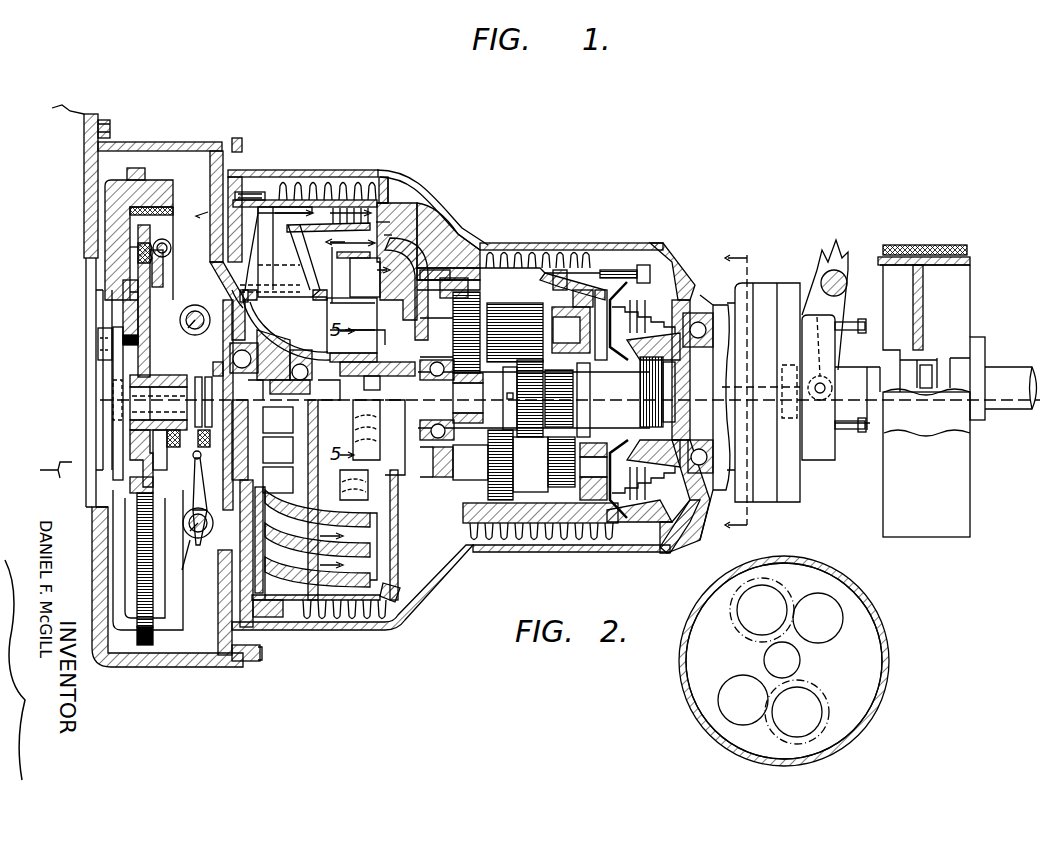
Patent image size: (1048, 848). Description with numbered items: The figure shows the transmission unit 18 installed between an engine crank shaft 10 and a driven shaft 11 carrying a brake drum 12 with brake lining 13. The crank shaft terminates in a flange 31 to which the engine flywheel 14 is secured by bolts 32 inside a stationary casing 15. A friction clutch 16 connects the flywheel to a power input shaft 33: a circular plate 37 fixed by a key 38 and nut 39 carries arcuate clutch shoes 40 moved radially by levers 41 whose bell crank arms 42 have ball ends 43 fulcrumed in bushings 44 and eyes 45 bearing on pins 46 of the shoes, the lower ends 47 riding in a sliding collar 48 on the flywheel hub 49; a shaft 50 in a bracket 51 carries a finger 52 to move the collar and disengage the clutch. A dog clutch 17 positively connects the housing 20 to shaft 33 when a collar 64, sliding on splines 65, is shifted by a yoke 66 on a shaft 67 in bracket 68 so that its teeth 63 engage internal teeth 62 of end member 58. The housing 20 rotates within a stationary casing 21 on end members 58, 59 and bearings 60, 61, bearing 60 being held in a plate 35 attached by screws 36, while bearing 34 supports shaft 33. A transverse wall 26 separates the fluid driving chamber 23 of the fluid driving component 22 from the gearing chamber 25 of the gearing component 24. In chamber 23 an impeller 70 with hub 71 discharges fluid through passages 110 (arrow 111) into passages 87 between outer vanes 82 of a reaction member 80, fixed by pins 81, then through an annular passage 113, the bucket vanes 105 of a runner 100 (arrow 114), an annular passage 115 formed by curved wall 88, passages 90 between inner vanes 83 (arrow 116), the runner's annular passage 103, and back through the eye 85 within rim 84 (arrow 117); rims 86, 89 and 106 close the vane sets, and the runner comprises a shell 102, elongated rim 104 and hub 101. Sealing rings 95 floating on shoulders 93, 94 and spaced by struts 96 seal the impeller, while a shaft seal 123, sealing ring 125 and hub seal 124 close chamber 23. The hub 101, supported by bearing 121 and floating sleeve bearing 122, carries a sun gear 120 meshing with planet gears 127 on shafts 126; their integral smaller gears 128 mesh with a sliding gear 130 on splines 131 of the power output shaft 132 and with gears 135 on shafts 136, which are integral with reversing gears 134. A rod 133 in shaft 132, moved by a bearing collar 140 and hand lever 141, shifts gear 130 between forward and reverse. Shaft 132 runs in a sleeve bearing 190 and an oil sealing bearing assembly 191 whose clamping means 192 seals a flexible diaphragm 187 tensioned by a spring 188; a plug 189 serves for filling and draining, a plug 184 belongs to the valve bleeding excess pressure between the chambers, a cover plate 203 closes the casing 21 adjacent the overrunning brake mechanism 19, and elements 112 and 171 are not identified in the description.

In FIG. 1, the engine crank shaft 10 is at (95, 450).
In FIG. 1, the driven shaft 11 is at (1018, 410).
In FIG. 1, the brake drum 12 is at (962, 300).
In FIG. 1, the brake lining 13 is at (967, 250).
In FIG. 1, the engine flywheel 14 is at (168, 630).
In FIG. 1, the stationary casing 15 is at (143, 645).
In FIG. 1, the friction clutch 16 is at (210, 212).
In FIG. 1, the dog clutch 17 is at (228, 372).
In FIG. 1, the transmission unit 18 is at (478, 243).
In FIG. 1, the overrunning brake mechanism 19 is at (770, 272).
In FIG. 1, the housing 20 is at (303, 605).
In FIG. 2, the housing 20 is at (886, 628).
In FIG. 1, the stationary casing 21 is at (425, 607).
In FIG. 1, the fluid driving component 22 is at (373, 590).
In FIG. 1, the fluid driving chamber 23 is at (400, 590).
In FIG. 1, the gearing component 24 is at (536, 505).
In FIG. 1, the gearing chamber 25 is at (560, 270).
In FIG. 2, the gearing chamber 25 is at (878, 676).
In FIG. 1, the transverse wall 26 is at (450, 540).
In FIG. 1, the flange 31 is at (130, 488).
In FIG. 1, the bolts 32 is at (98, 342).
In FIG. 1, the power input shaft 33 is at (135, 405).
In FIG. 1, the bearing 34 is at (302, 348).
In FIG. 1, the plate 35 is at (212, 190).
In FIG. 1, the screws 36 is at (240, 138).
In FIG. 1, the circular plate 37 is at (113, 302).
In FIG. 1, the key 38 is at (130, 390).
In FIG. 1, the nut 39 is at (130, 425).
In FIG. 1, the arcuate clutch shoes 40 is at (105, 205).
In FIG. 1, the levers 41 is at (130, 298).
In FIG. 1, the bell crank arms 42 is at (138, 232).
In FIG. 1, the ball ends 43 is at (150, 244).
In FIG. 1, the bushings 44 is at (130, 247).
In FIG. 1, the eyes 45 is at (138, 258).
In FIG. 1, the pins 46 is at (172, 246).
In FIG. 1, the lower ends of levers 47 is at (112, 322).
In FIG. 1, the sliding collar 48 is at (130, 378).
In FIG. 1, the hub of flywheel 49 is at (130, 430).
In FIG. 1, the shaft 50 is at (100, 310).
In FIG. 1, the bracket 51 is at (138, 300).
In FIG. 1, the yoke or finger 52 is at (195, 335).
In FIG. 1, the end member 58 is at (240, 192).
In FIG. 1, the end member 59 is at (675, 275).
In FIG. 1, the bearing 60 is at (232, 352).
In FIG. 1, the bearing 61 is at (700, 313).
In FIG. 1, the internal teeth 62 is at (270, 406).
In FIG. 1, the comating teeth 63 is at (278, 454).
In FIG. 1, the collar 64 is at (205, 460).
In FIG. 1, the splines 65 is at (150, 400).
In FIG. 1, the finger or yoke 66 is at (153, 470).
In FIG. 1, the shaft 67 is at (198, 538).
In FIG. 1, the bracket 68 is at (208, 540).
In FIG. 1, the impeller 70 is at (295, 178).
In FIG. 1, the hub 71 is at (326, 490).
In FIG. 1, the reaction member 80 is at (333, 206).
In FIG. 1, the pins 81 is at (228, 230).
In FIG. 1, the outer set of vanes 82 is at (340, 206).
In FIG. 1, the inner set of vanes 83 is at (452, 225).
In FIG. 1, the inner cylindrical rim 84 is at (445, 245).
In FIG. 1, the eye 85 is at (397, 261).
In FIG. 1, the cylindrical rim 86 is at (347, 206).
In FIG. 1, the radially closed passages 87 is at (361, 206).
In FIG. 1, the curved wall 88 is at (354, 206).
In FIG. 1, the cylindrical rim 89 is at (432, 220).
In FIG. 1, the radially closed passages 90 is at (370, 277).
In FIG. 1, the annular shoulder 93 is at (262, 310).
In FIG. 1, the annular shoulder 94 is at (305, 310).
In FIG. 1, the sealing rings 95 is at (240, 292).
In FIG. 1, the pins or struts 96 is at (240, 285).
In FIG. 1, the runner 100 is at (488, 258).
In FIG. 1, the hub 101 is at (365, 337).
In FIG. 1, the shell 102 is at (470, 258).
In FIG. 1, the annular fluid passage 103 is at (406, 289).
In FIG. 1, the elongated rim 104 is at (418, 196).
In FIG. 1, the bucket vanes 105 is at (352, 470).
In FIG. 1, the surrounding cylindrical rim 106 is at (382, 222).
In FIG. 1, the passages 110 is at (307, 253).
In FIG. 1, the arrow 111 is at (273, 205).
In FIG. 1, the pin 112 is at (290, 205).
In FIG. 1, the circumferential annular passage 113 is at (368, 206).
In FIG. 1, the arrow 114 is at (390, 235).
In FIG. 1, the annular passage 115 is at (325, 240).
In FIG. 1, the arrow 116 is at (357, 262).
In FIG. 1, the arrow 117 is at (362, 319).
In FIG. 1, the sun gear 120 is at (460, 418).
In FIG. 2, the sun gear 120 is at (800, 658).
In FIG. 1, the bearing 121 is at (415, 466).
In FIG. 1, the floating sleeve bearing 122 is at (374, 388).
In FIG. 1, the shaft seal 123 is at (290, 363).
In FIG. 1, the hub seal 124 is at (382, 430).
In FIG. 1, the sealing ring 125 is at (255, 635).
In FIG. 1, the shafts 126 is at (600, 290).
In FIG. 1, the planet gears 127 is at (470, 292).
In FIG. 2, the planet gears 127 is at (792, 585).
In FIG. 1, the smaller gears 128 is at (512, 303).
In FIG. 2, the smaller gears 128 is at (790, 592).
In FIG. 1, the sliding gear 130 is at (520, 500).
In FIG. 1, the splines 131 is at (573, 290).
In FIG. 1, the power output shaft 132 is at (862, 367).
In FIG. 1, the rod 133 is at (752, 380).
In FIG. 1, the reversing gears 134 is at (558, 500).
In FIG. 1, the gears 135 is at (503, 500).
In FIG. 2, the gears 135 is at (843, 610).
In FIG. 1, the shafts 136 is at (588, 505).
In FIG. 1, the bearing collar 140 is at (818, 460).
In FIG. 1, the hand lever 141 is at (848, 252).
In FIG. 1, the bearing 171 is at (455, 278).
In FIG. 1, the plug 184 is at (436, 205).
In FIG. 1, the flexible diaphragm 187 is at (620, 300).
In FIG. 1, the spring 188 is at (650, 320).
In FIG. 1, the plug 189 is at (405, 628).
In FIG. 1, the sleeve bearing 190 is at (675, 340).
In FIG. 1, the oil sealing bearing assembly 191 is at (668, 553).
In FIG. 1, the clamping means 192 is at (643, 522).
In FIG. 1, the cover plate 203 is at (795, 283).